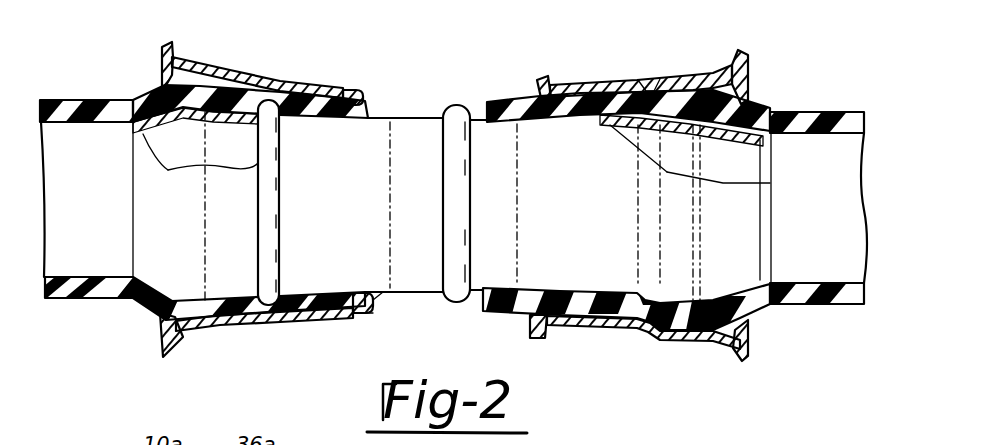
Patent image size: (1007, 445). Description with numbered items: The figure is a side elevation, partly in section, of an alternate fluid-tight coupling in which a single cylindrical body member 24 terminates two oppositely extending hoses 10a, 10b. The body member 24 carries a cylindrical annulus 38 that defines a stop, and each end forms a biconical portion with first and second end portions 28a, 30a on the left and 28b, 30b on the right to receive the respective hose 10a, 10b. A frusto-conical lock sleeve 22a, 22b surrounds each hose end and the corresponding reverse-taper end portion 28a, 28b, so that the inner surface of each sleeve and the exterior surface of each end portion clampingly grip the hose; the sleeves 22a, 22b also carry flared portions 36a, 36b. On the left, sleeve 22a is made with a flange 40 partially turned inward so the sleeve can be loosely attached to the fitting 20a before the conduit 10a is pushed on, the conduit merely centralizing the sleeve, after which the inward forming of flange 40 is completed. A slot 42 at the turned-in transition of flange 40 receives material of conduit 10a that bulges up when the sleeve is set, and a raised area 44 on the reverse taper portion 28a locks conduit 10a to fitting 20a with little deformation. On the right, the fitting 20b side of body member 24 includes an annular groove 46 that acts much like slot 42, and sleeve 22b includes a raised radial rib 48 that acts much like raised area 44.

The hose 10a is at (62, 110).
The hose 10b is at (840, 117).
The fitting 20a is at (381, 112).
The fitting 20b is at (479, 110).
The lock sleeve 22a is at (242, 66).
The lock sleeve 22b is at (691, 62).
The cylindrical body member 24 is at (422, 116).
The first end portion 28a is at (229, 126).
The first end portion 28b is at (617, 132).
The second end portion 30a is at (166, 170).
The second end portion 30b is at (735, 142).
The flared portion 36a is at (197, 187).
The flared portion 36b is at (755, 69).
The cylindrical annulus 38 is at (443, 188).
The flange 40 is at (383, 294).
The slot 42 is at (367, 318).
The raised area 44 is at (283, 150).
The annular groove 46 is at (645, 234).
The raised radial groove or rib 48 is at (637, 90).